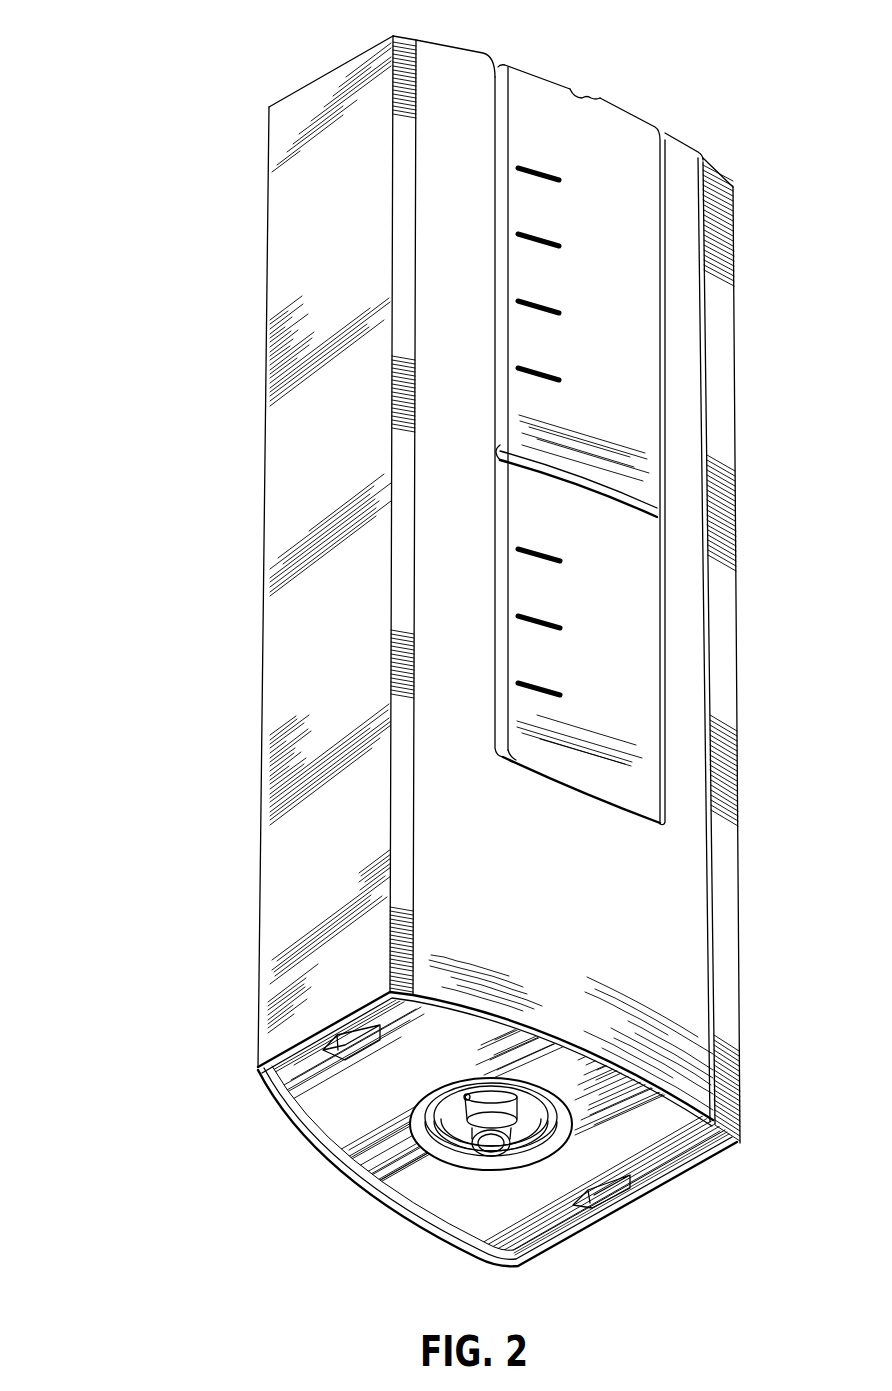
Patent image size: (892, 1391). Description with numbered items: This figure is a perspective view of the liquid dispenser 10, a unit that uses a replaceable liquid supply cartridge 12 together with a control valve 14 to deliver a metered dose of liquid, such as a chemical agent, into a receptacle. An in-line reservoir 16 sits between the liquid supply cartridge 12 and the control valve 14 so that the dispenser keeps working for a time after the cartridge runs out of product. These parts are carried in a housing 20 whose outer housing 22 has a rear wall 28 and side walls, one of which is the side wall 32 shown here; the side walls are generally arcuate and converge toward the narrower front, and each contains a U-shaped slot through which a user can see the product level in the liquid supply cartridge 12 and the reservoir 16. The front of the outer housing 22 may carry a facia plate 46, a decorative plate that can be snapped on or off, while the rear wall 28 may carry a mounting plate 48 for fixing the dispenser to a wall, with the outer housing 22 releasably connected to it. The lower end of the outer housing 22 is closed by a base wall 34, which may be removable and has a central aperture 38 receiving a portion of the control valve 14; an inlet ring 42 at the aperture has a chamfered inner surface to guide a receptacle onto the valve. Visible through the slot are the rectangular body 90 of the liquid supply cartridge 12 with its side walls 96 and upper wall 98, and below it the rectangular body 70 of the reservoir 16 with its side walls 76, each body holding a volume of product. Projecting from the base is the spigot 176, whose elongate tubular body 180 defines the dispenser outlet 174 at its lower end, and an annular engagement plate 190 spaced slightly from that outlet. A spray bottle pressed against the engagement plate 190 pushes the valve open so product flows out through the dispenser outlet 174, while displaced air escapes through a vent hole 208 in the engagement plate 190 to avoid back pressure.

The liquid dispenser 10 is at (150, 90).
The liquid supply cartridge 12 is at (480, 176).
The control valve 14 is at (458, 1153).
The reservoir 16 is at (484, 521).
The housing 20 is at (257, 246).
The outer housing 22 is at (449, 46).
The rear wall 28 is at (687, 138).
The side wall 32 is at (559, 928).
The base wall 34 is at (632, 1128).
The central aperture 38 is at (413, 1124).
The inlet ring 42 is at (424, 1127).
The facia plate 46 is at (264, 574).
The mounting plate 48 is at (730, 580).
The body 70 is at (500, 580).
The side walls 76 is at (614, 598).
The body 90 is at (497, 235).
The side walls 96 is at (614, 276).
The upper wall 98 is at (614, 103).
The dispenser outlet 174 is at (489, 1157).
The spigot 176 is at (506, 1151).
The elongate tubular body 180 is at (483, 1096).
The engagement plate 190 is at (540, 1133).
The vent hole 208 is at (466, 1094).